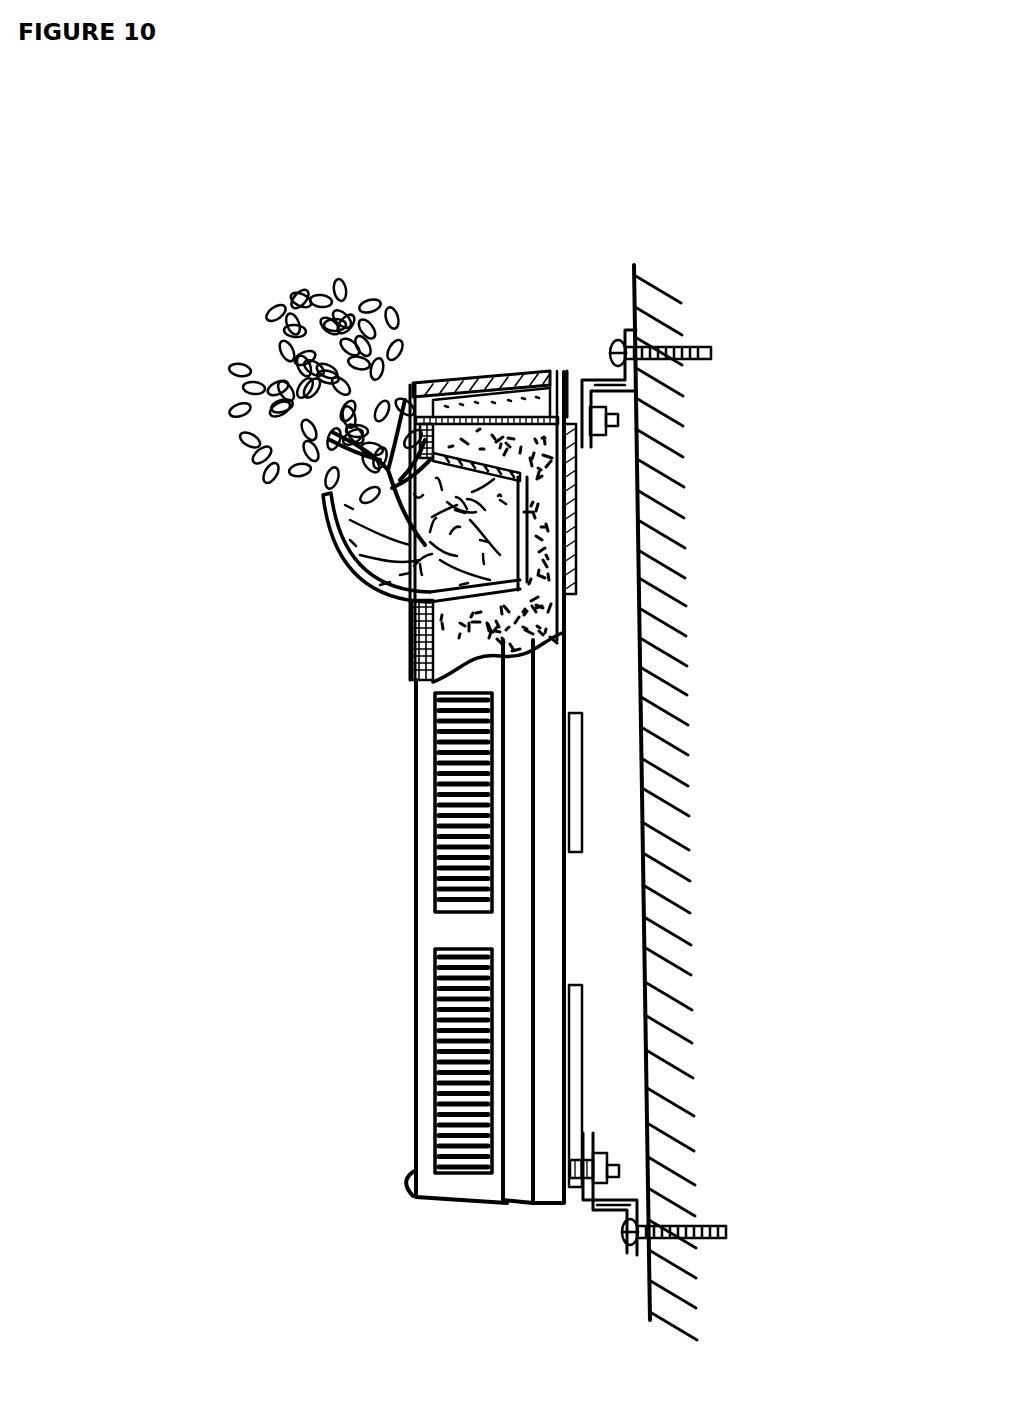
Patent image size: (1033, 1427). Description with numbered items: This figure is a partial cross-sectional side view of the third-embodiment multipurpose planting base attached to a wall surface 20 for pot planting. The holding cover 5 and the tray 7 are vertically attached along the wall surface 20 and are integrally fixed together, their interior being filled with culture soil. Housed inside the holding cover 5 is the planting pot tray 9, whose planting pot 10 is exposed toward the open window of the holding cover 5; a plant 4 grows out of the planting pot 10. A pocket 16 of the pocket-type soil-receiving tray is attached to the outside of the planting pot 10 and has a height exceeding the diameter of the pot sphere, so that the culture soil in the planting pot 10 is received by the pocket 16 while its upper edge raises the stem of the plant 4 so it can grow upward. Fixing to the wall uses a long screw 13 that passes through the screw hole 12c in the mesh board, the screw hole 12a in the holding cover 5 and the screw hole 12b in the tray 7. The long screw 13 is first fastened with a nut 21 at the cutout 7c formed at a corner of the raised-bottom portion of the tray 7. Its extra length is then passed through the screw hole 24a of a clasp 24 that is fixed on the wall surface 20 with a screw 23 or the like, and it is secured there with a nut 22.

The plant 4 is at (262, 330).
The holding cover 5 is at (420, 940).
The tray 7 is at (551, 905).
The cutout 7c is at (565, 378).
The planting pot tray 9 is at (412, 660).
The planting pot 10 is at (562, 636).
The screw hole 12a is at (432, 385).
The screw hole 12b is at (512, 378).
The screw hole 12c is at (413, 383).
The long screw 13 is at (480, 388).
The pocket 16 is at (325, 578).
The wall surface 20 is at (680, 762).
The nut 21 is at (545, 378).
The nut 22 is at (609, 440).
The screw 23 is at (688, 350).
The clasp 24 is at (583, 378).
The screw hole 24a is at (600, 393).